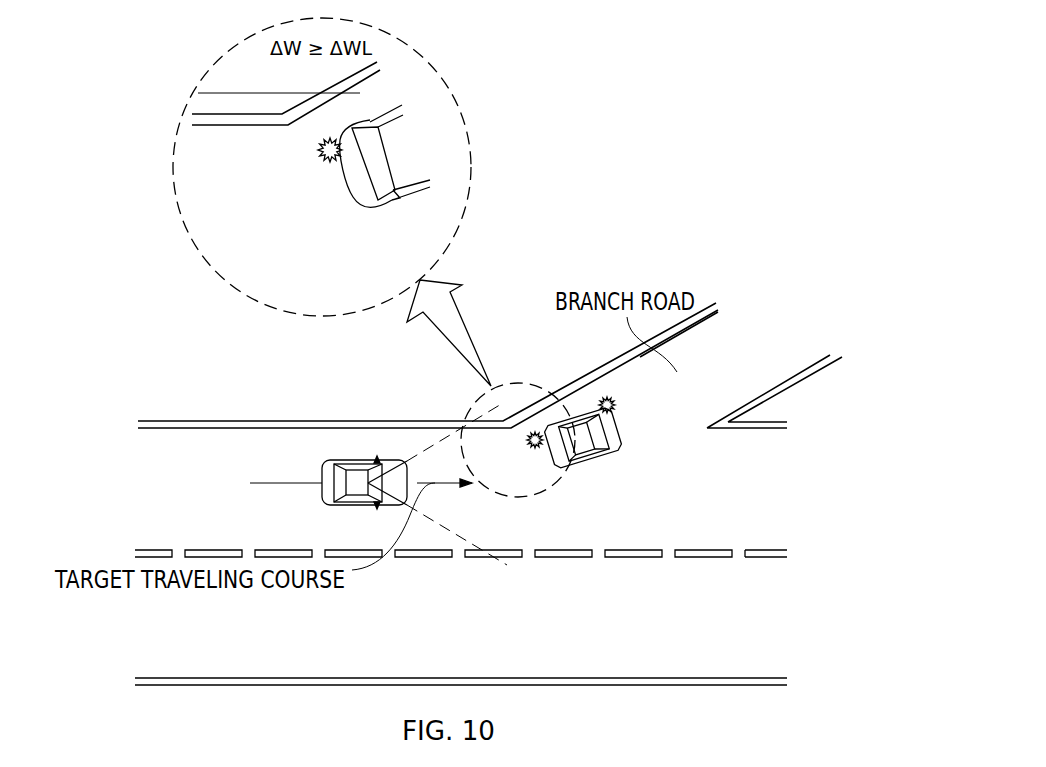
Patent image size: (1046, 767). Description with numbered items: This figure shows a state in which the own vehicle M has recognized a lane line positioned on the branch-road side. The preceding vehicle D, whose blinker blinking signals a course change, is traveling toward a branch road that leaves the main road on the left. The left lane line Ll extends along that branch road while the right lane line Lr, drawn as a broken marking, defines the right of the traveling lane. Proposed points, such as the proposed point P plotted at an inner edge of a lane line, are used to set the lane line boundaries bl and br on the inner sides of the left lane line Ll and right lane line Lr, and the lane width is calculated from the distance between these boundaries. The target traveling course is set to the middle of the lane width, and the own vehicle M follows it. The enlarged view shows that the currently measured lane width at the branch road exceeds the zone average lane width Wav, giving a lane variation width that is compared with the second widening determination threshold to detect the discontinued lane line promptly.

The own vehicle M is at (322, 473).
The preceding vehicle D is at (613, 455).
The proposed point P is at (353, 190).
The left lane line Ll is at (318, 420).
The right lane line Lr is at (433, 558).
The left lane line boundary bl is at (640, 358).
The right lane line boundary br is at (563, 550).
The zone average lane width Wav is at (232, 243).